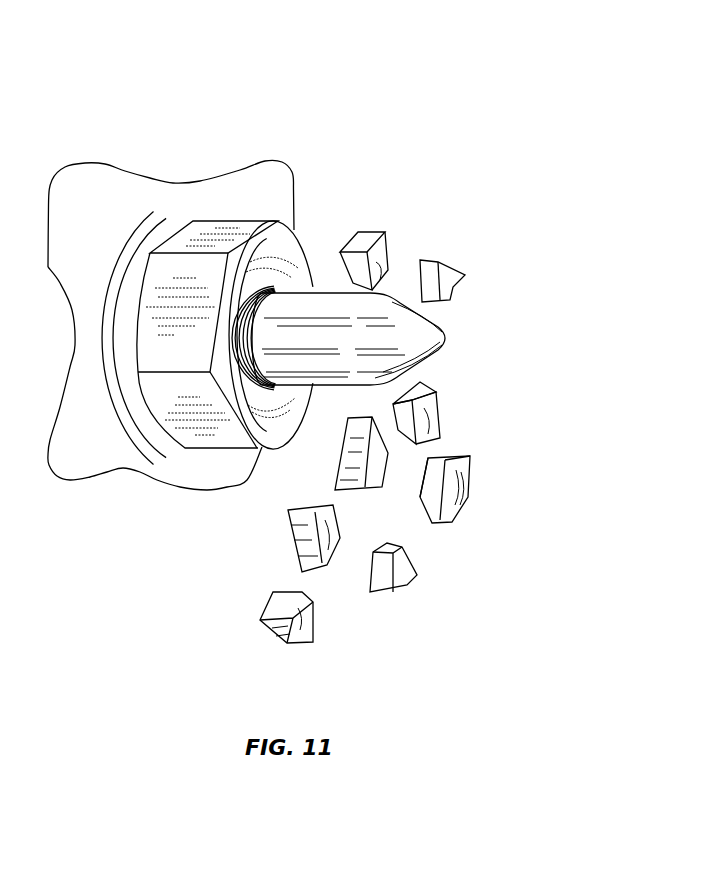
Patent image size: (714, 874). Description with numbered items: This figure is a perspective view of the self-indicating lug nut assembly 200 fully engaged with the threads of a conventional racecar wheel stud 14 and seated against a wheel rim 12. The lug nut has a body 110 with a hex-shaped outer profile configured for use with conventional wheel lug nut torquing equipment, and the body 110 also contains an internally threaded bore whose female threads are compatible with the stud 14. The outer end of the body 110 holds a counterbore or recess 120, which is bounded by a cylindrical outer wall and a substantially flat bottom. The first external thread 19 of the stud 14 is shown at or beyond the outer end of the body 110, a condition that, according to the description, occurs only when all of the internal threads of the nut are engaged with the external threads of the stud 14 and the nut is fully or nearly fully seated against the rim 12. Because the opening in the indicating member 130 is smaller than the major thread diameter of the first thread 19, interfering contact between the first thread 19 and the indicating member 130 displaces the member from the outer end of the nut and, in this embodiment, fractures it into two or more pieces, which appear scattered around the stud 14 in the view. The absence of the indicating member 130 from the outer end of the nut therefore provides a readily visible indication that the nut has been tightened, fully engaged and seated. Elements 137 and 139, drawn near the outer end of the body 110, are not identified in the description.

The assembly 200 is at (440, 63).
The wheel rim 12 is at (100, 218).
The body 110 is at (252, 221).
The recess 120 is at (297, 423).
The outer seal ring 139 is at (272, 288).
The inner seal ring 137 is at (276, 290).
The first external thread 19 is at (284, 287).
The stud 14 is at (398, 288).
The indicating member 130 is at (453, 287).